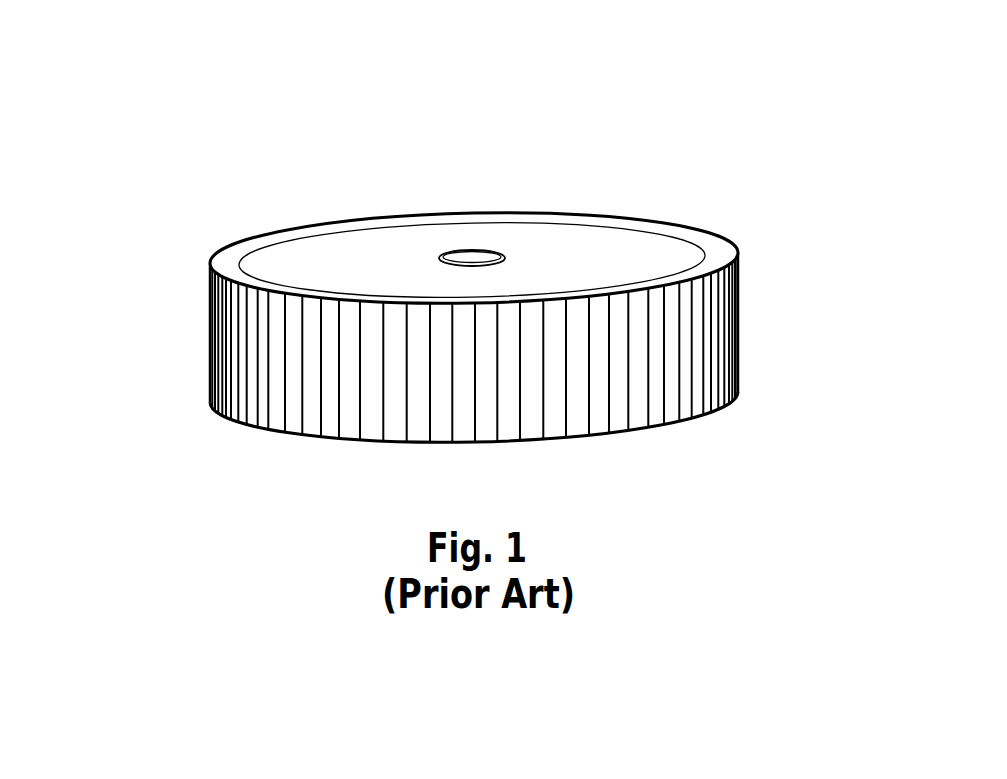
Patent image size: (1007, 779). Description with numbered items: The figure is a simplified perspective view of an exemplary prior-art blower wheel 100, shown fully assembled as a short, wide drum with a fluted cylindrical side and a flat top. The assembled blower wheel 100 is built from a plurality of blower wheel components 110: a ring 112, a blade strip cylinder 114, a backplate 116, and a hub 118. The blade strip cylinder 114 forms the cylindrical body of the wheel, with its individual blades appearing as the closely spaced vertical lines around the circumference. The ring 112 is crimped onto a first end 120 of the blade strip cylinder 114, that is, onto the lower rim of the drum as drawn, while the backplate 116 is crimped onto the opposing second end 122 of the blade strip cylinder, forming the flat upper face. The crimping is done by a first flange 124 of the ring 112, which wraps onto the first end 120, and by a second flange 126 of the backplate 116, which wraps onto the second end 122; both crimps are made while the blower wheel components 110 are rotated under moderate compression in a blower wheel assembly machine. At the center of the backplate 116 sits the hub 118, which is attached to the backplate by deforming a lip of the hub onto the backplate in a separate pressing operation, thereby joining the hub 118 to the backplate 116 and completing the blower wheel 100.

The assembled blower wheel 100 is at (585, 55).
The blower wheel components 110 is at (288, 187).
The ring 112 is at (663, 423).
The blade strip cylinder 114 is at (740, 328).
The backplate 116 is at (632, 248).
The hub 118 is at (503, 257).
The first end 120 is at (200, 432).
The second end 122 is at (197, 248).
The first flange 124 is at (545, 440).
The second flange 126 is at (737, 252).